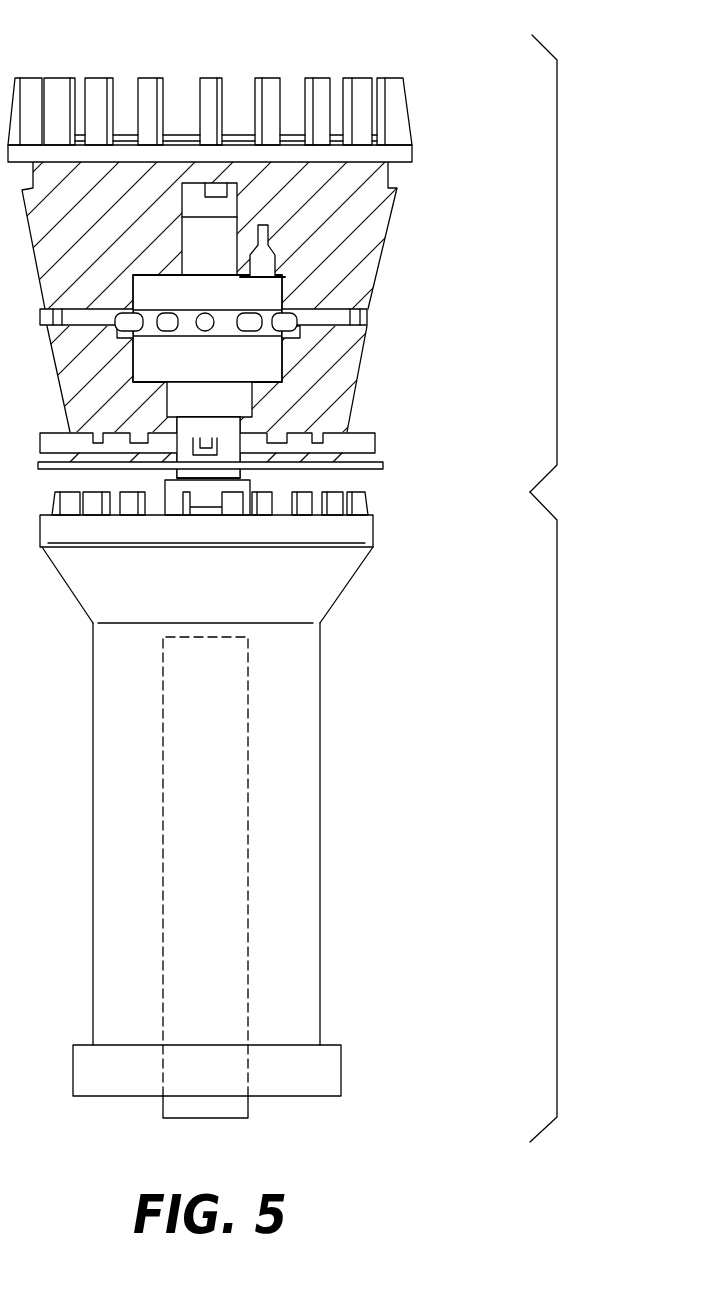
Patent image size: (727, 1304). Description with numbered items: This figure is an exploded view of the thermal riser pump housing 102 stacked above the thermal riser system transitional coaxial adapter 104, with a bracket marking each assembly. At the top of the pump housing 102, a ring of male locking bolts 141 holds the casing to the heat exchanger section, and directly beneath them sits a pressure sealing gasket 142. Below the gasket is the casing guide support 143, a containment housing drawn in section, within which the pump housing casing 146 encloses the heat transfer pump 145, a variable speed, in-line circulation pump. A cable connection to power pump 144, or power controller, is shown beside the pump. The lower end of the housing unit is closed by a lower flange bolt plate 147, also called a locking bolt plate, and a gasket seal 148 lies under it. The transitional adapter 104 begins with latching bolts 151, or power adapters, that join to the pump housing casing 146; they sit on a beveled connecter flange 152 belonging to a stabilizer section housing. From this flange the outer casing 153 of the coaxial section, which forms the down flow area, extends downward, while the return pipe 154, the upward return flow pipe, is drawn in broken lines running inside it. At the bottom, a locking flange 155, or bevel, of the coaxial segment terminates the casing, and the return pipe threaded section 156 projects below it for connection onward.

The thermal riser pump housing 102 is at (557, 262).
The thermal riser system transitional coaxial adapter 104 is at (557, 792).
The locking bolts 141 is at (449, 94).
The pressure sealing gasket 142 is at (421, 150).
The casing guide support 143 is at (406, 182).
The cable connection to power pump 144 is at (280, 254).
The heat transfer pump 145 is at (375, 313).
The pump housing casing 146 is at (355, 345).
The lower flange bolt plate 147 is at (386, 440).
The gasket seal 148 is at (398, 465).
The latching bolts 151 is at (374, 505).
The beveled connecter flange 152 is at (358, 580).
The outer casing of the coaxial section 153 is at (285, 795).
The return pipe of the coaxial section 154 is at (236, 879).
The locking flange of the coaxial segment 155 is at (352, 1052).
The return pipe threaded section 156 is at (265, 1112).